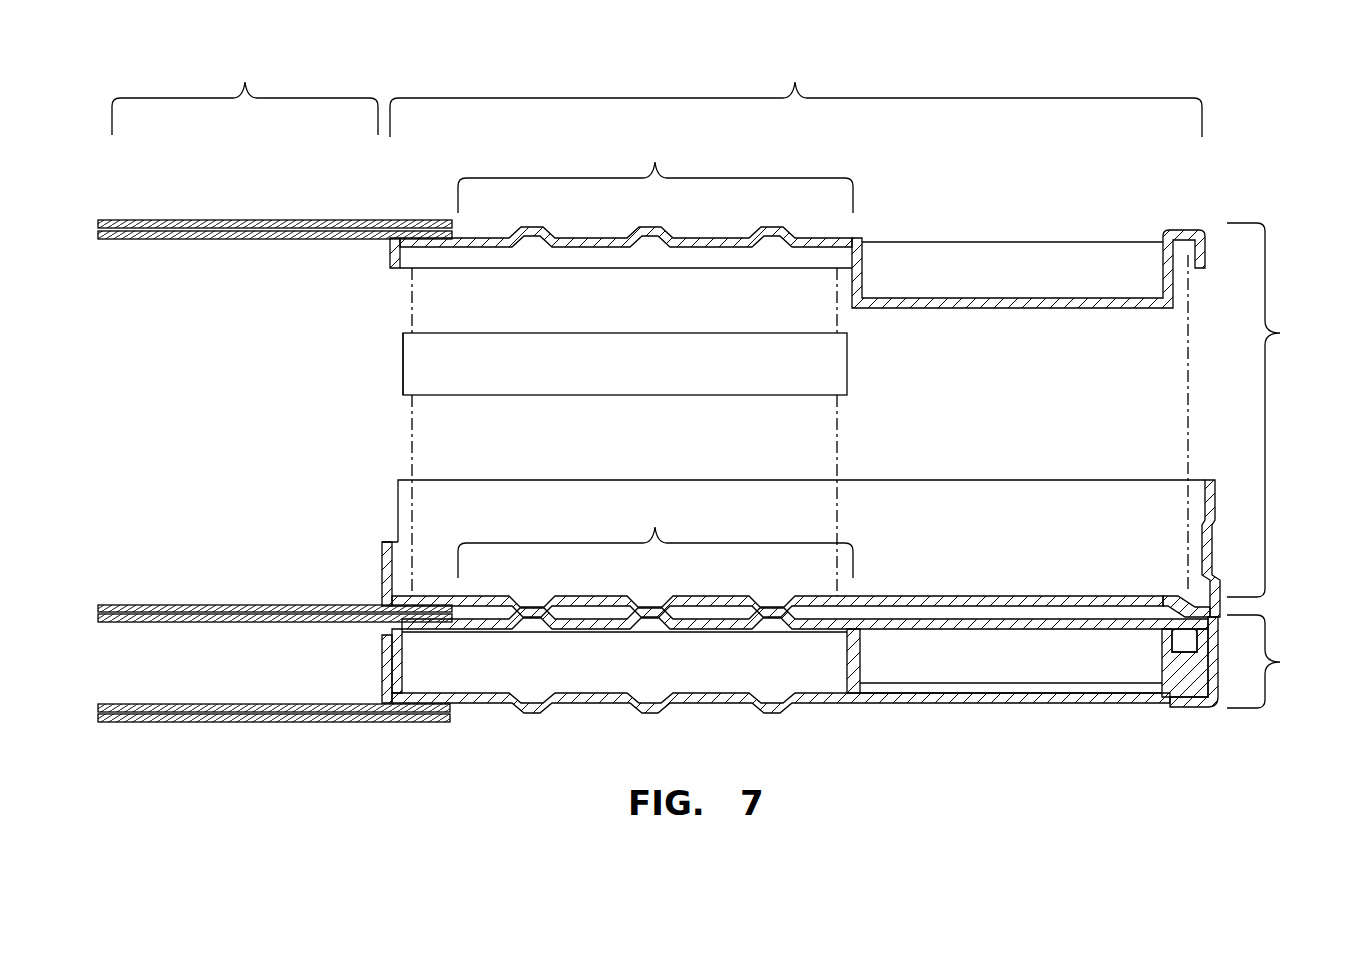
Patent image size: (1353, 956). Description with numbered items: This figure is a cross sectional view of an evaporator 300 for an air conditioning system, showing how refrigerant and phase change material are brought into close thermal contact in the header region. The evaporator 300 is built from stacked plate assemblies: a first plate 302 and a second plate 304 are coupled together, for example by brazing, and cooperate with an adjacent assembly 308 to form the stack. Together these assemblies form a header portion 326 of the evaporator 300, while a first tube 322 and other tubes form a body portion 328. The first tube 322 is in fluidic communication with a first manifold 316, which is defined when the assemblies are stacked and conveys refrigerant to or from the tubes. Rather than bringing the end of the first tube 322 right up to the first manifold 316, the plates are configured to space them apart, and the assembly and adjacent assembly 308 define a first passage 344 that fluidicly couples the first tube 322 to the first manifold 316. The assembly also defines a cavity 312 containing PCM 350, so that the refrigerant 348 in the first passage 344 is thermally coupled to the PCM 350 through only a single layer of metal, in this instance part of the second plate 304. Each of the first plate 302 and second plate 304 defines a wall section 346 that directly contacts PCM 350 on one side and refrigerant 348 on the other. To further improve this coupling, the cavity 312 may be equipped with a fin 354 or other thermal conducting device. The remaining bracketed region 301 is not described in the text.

The evaporator 300 is at (1233, 163).
The cover assembly portion 301 is at (1277, 410).
The first plate 302 is at (1205, 258).
The second plate 304 is at (1218, 500).
The adjacent assembly 308 is at (1277, 661).
The cavity 312 is at (452, 532).
The first manifold 316 is at (1070, 713).
The first tube 322 is at (159, 604).
The header portion 326 is at (796, 160).
The body portion 328 is at (275, 145).
The first passage 344 is at (607, 618).
The wall section 346 is at (655, 356).
The refrigerant 348 is at (492, 613).
The PCM 350 is at (430, 382).
The fin 354 is at (403, 345).